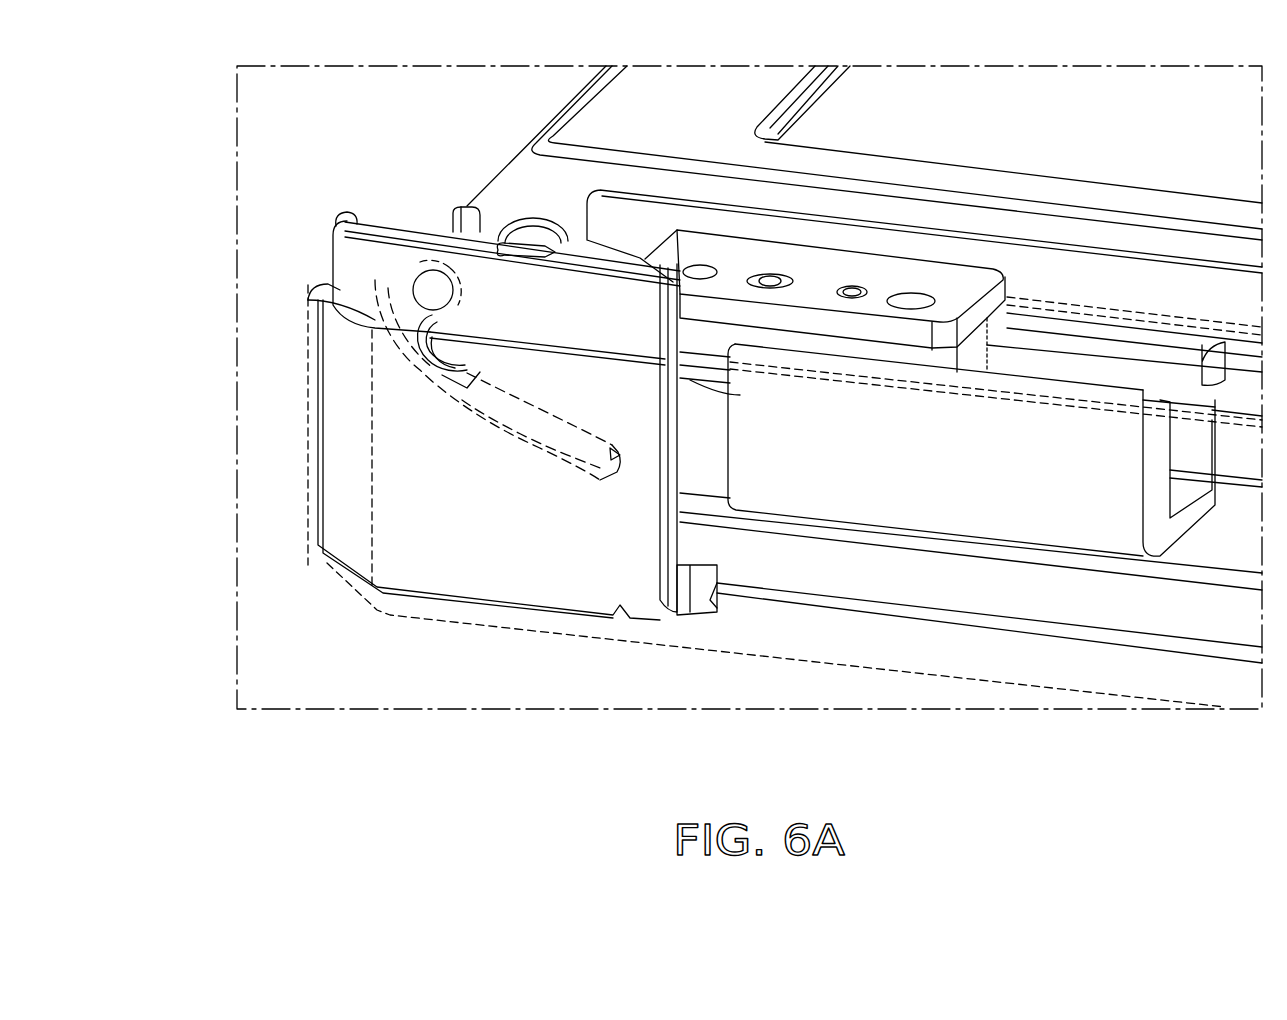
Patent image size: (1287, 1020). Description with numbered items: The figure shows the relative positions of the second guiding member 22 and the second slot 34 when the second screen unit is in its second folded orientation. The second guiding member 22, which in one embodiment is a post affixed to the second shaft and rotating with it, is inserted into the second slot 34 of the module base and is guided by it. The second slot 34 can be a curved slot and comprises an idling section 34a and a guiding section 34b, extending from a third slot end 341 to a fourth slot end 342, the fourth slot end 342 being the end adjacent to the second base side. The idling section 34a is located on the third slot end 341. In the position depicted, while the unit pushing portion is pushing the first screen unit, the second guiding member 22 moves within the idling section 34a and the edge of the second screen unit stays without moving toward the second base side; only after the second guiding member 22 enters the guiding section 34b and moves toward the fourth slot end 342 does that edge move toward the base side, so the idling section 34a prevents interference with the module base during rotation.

The second guiding member 22 is at (432, 290).
The second slot 34 is at (490, 430).
The idling section 34a is at (383, 304).
The guiding section 34b is at (447, 403).
The third slot end 341 is at (437, 266).
The fourth slot end 342 is at (615, 465).